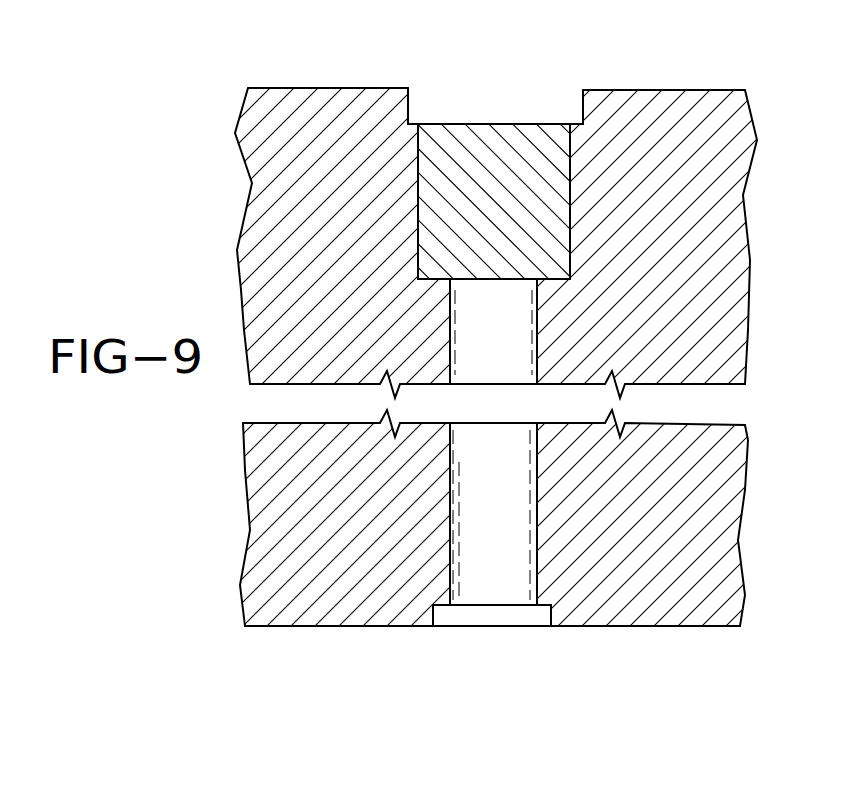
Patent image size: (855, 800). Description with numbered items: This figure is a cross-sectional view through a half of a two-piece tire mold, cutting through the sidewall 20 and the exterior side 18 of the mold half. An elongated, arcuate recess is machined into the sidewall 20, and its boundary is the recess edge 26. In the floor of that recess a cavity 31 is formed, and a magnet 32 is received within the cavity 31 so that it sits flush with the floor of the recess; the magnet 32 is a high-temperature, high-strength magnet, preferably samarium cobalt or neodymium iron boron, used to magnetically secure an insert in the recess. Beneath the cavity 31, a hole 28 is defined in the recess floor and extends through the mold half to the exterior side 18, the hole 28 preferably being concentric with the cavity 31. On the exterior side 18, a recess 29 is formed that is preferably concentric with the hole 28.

The exterior side 18 is at (608, 627).
The sidewall 20 is at (370, 88).
The recess edge 26 is at (583, 90).
The hole 28 is at (533, 493).
The recess 29 is at (435, 608).
The cavity 31 is at (418, 223).
The magnet 32 is at (480, 158).